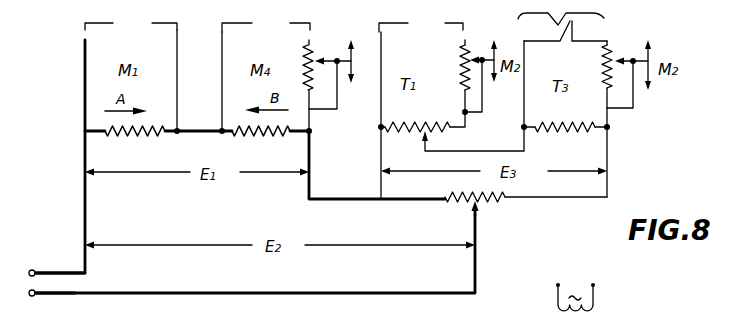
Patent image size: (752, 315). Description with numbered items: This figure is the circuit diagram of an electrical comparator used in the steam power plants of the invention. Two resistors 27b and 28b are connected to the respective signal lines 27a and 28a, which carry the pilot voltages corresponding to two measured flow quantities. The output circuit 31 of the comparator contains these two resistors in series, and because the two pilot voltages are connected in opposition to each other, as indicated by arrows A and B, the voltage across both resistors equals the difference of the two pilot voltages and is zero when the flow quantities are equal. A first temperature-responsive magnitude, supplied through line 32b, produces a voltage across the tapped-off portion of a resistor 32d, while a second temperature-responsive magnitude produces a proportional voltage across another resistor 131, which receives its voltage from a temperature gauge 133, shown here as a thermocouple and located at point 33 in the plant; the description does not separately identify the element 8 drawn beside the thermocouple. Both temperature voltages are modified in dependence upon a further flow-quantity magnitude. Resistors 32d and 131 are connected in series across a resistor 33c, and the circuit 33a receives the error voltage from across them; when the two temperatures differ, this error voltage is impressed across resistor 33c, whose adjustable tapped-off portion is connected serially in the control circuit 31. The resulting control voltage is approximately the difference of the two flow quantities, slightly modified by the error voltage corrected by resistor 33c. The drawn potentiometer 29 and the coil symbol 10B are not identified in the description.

The thermocouple 8 is at (553, 21).
The heater coil 10B is at (598, 312).
The signal line 27a is at (131, 73).
The resistor 27b is at (128, 137).
The signal line 28a is at (266, 73).
The resistor 28b is at (262, 137).
The potentiometer 29 is at (313, 45).
The output circuit 31 is at (24, 268).
The line 32b is at (438, 107).
The resistor 32d is at (420, 122).
The point 33 is at (626, 66).
The circuit 33a is at (609, 151).
The resistor 33c is at (500, 201).
The resistor 131 is at (560, 133).
The temperature gauge 133 is at (572, 30).